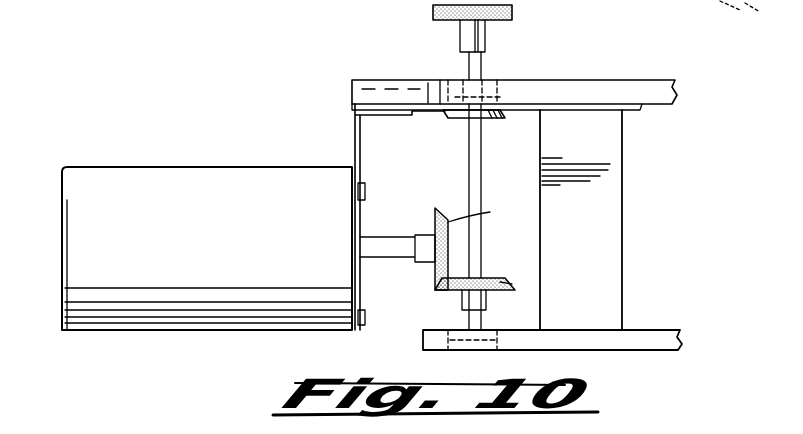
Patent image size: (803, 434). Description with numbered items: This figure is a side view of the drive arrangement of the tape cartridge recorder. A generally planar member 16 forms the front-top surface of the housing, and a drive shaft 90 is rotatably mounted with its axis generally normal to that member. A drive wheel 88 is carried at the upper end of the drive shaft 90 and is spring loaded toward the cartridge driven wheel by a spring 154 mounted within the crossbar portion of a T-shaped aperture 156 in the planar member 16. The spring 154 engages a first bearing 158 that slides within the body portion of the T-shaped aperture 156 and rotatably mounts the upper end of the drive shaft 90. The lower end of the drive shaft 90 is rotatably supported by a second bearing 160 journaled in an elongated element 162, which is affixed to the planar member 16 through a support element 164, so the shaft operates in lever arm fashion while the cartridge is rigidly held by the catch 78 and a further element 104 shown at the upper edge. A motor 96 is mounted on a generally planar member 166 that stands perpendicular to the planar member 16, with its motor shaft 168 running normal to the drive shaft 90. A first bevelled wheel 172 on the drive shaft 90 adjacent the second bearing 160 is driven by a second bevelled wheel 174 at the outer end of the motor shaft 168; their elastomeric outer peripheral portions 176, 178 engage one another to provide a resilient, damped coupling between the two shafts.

The planar member 16 is at (603, 90).
The catch 78 is at (707, 8).
The drive wheel 88 is at (433, 18).
The drive shaft 90 is at (469, 147).
The motor 96 is at (190, 254).
The member 104 is at (726, 20).
The spring 154 is at (352, 92).
The T-shaped aperture 156 is at (458, 82).
The first bearing 158 is at (505, 110).
The second bearing 160 is at (490, 333).
The elongated element 162 is at (658, 332).
The support element 164 is at (622, 260).
The planar member 166 is at (355, 140).
The motor shaft 168 is at (389, 246).
The first bevelled wheel 172 is at (446, 290).
The second bevelled wheel 174 is at (441, 210).
The outer peripheral portion 176 is at (508, 282).
The outer peripheral portion 178 is at (448, 224).